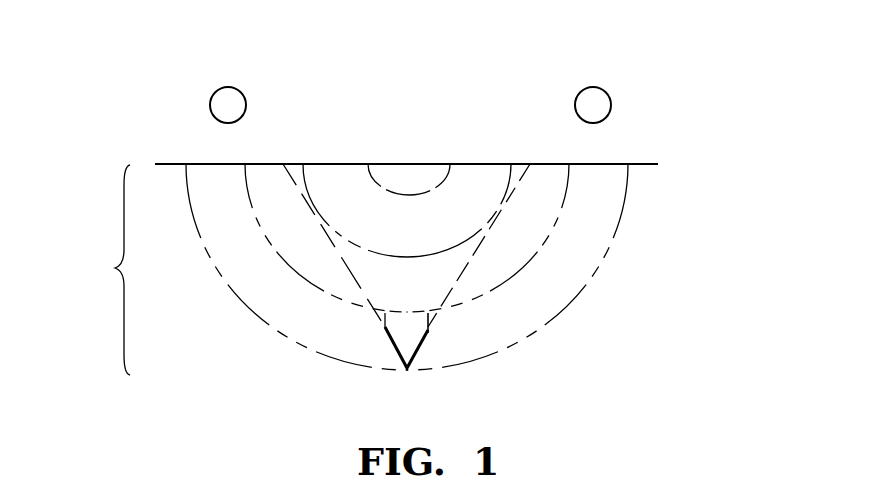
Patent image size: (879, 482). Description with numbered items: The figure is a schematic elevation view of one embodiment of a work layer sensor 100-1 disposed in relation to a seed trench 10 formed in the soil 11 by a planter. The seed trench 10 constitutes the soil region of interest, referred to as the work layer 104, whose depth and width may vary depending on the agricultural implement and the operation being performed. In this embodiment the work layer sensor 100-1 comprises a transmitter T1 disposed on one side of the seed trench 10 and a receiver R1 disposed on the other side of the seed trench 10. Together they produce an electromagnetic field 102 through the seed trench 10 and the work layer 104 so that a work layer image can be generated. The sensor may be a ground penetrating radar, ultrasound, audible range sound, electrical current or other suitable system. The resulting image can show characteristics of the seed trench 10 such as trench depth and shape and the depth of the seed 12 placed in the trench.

The work layer sensor 100-1 is at (827, 30).
The soil 11 is at (647, 163).
The receiver R1 is at (227, 102).
The transmitter T1 is at (598, 102).
The seed trench 10 is at (410, 210).
The work layer 104 is at (115, 268).
The electromagnetic field 102 is at (560, 280).
The seed 12 is at (417, 330).